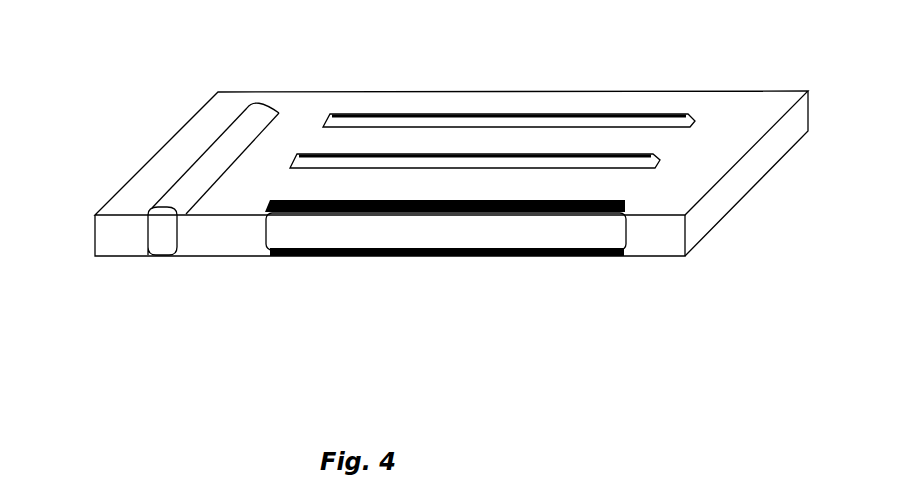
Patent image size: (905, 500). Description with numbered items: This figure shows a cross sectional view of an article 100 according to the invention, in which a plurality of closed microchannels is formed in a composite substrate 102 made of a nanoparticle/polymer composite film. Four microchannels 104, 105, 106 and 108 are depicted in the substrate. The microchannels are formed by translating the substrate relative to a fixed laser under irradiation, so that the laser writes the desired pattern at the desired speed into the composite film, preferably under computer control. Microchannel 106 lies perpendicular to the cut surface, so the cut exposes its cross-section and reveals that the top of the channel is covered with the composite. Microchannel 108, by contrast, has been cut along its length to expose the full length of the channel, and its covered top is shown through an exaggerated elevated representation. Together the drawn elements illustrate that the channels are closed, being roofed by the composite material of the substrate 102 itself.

The article 100 is at (160, 313).
The composite substrate 102 is at (186, 142).
The microchannel 104 is at (665, 119).
The microchannel 105 is at (627, 157).
The microchannel 106 is at (618, 203).
The microchannel 108 is at (163, 238).